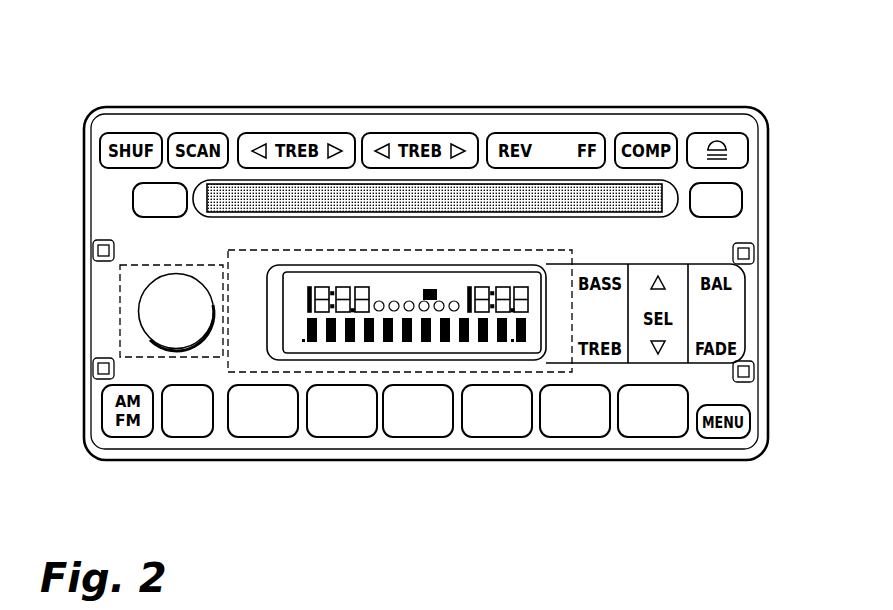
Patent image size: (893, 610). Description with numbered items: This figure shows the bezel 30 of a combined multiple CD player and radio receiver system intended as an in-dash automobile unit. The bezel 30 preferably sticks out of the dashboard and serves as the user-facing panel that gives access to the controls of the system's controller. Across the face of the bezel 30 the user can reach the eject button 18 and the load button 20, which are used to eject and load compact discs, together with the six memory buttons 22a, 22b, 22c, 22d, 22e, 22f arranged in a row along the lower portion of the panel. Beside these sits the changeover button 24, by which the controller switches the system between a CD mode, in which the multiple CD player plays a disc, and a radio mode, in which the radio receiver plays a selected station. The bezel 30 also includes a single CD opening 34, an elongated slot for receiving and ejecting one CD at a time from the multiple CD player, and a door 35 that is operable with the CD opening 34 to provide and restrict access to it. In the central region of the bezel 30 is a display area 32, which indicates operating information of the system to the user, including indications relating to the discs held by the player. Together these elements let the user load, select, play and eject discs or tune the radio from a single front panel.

The eject button 18 is at (742, 201).
The load button 20 is at (133, 198).
The memory button 22a is at (260, 437).
The memory button 22b is at (337, 437).
The memory button 22c is at (417, 437).
The memory button 22d is at (495, 437).
The memory button 22e is at (572, 437).
The memory button 22f is at (650, 437).
The changeover button 24 is at (157, 437).
The bezel 30 is at (583, 92).
The display area 32 is at (523, 250).
The CD opening 34 is at (339, 177).
The door 35 is at (462, 185).